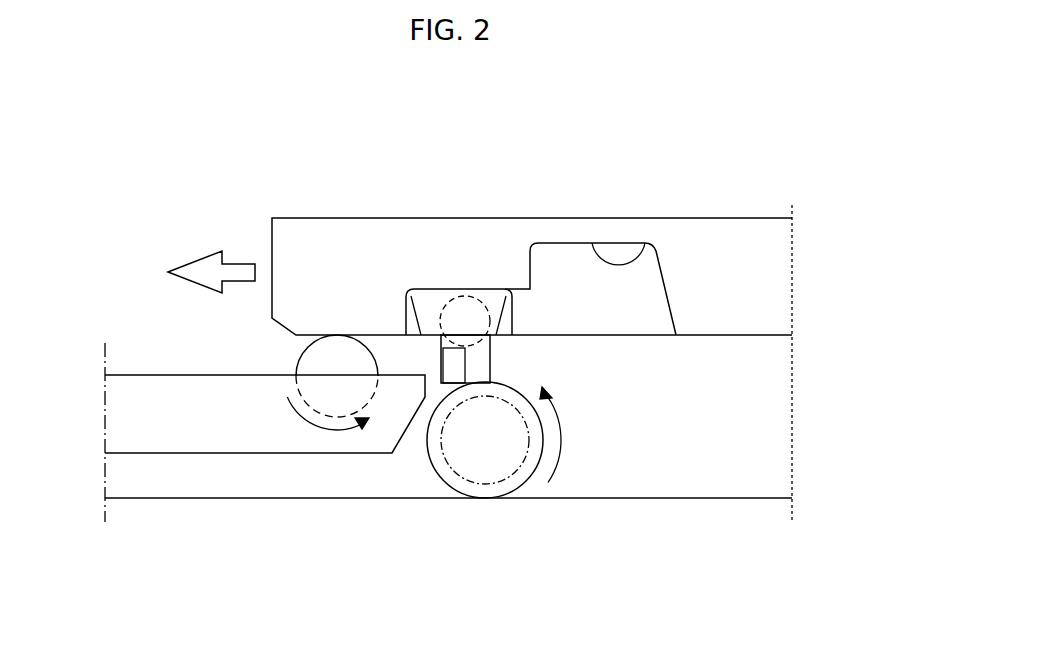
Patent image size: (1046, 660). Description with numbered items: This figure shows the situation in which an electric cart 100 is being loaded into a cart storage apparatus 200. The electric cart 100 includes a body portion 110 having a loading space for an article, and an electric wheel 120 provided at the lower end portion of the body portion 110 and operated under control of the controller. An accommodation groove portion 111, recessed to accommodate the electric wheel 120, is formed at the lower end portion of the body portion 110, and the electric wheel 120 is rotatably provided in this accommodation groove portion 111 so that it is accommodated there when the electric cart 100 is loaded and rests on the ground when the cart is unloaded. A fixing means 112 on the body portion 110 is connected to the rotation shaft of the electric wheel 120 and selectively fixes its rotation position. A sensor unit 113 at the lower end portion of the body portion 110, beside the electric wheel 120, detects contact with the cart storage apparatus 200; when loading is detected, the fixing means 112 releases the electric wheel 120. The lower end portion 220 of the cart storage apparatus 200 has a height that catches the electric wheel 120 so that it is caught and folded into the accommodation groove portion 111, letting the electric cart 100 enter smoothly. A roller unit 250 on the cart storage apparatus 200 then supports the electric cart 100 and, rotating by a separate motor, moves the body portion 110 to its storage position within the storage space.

The electric cart 100 is at (546, 205).
The body portion 110 is at (726, 245).
The accommodation groove portion 111 is at (643, 243).
The fixing means 112 is at (462, 305).
The sensor unit 113 is at (452, 365).
The electric wheel 120 is at (485, 452).
The cart storage apparatus 200 is at (183, 455).
The lower end portion 220 is at (240, 428).
The roller unit 250 is at (336, 353).